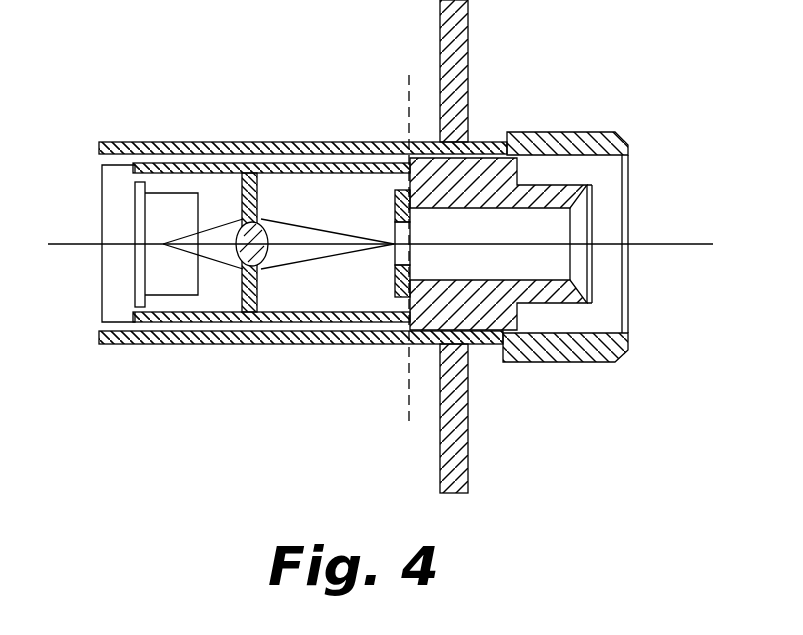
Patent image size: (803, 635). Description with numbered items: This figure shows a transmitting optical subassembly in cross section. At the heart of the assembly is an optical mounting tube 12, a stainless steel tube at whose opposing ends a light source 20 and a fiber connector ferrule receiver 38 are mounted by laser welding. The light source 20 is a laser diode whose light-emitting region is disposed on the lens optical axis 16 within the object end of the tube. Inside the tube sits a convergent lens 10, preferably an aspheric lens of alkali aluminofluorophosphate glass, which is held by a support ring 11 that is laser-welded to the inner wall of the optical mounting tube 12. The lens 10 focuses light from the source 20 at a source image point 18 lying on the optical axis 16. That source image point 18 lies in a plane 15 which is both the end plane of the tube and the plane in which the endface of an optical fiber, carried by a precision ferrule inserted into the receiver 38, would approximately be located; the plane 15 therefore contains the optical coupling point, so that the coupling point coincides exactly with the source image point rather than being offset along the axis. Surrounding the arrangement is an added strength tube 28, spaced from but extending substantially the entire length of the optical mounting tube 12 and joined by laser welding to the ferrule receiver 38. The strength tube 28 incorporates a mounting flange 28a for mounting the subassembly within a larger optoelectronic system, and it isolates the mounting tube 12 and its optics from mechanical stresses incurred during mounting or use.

The lens 10 is at (261, 266).
The support ring 11 is at (257, 192).
The optical mounting tube 12 is at (344, 166).
The plane 15 is at (415, 266).
The lens optical axis 16 is at (679, 244).
The source image point 18 is at (413, 248).
The light source 20 is at (112, 179).
The strength tube 28 is at (581, 133).
The mounting flange 28a is at (470, 23).
The fiber connector ferrule receiver 38 is at (488, 158).